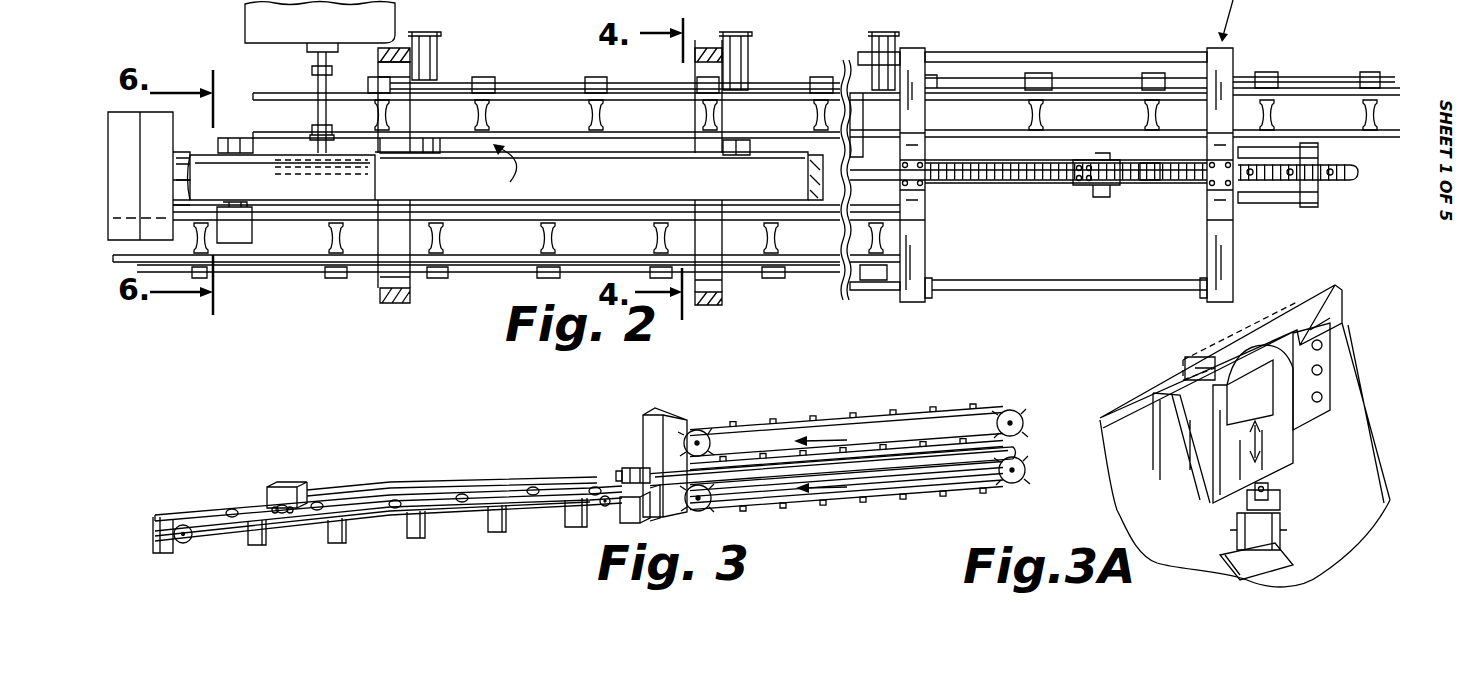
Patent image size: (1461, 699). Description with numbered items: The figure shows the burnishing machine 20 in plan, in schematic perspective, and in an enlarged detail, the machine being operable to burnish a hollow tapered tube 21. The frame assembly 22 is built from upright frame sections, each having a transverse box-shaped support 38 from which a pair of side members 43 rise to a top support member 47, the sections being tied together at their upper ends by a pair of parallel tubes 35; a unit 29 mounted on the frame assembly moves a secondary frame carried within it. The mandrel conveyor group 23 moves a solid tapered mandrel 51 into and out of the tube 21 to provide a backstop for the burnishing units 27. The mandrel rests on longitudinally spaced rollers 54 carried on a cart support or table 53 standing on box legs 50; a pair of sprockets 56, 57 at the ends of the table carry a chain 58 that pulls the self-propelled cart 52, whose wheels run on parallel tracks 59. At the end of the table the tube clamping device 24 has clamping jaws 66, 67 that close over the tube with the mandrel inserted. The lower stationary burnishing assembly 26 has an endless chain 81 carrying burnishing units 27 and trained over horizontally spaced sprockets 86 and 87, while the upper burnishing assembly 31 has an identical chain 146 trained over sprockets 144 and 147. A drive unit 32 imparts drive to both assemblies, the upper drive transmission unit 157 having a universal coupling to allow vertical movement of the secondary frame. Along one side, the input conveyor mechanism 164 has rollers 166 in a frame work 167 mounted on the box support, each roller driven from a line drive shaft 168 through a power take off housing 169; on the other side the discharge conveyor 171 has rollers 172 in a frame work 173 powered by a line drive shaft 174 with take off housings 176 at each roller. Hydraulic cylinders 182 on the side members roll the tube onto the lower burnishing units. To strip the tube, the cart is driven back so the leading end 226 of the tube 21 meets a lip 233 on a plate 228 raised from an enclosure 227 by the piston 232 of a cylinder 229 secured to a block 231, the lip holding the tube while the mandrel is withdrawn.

In FIG. 3, the burnishing machine 20 is at (372, 418).
In FIG. 2, the hollow tapered tube 21 is at (765, 158).
In FIG. 3, the hollow tapered tube 21 is at (1016, 446).
In FIG. 2, the frame assembly 22 is at (935, 35).
In FIG. 3, the mandrel conveyor group 23 is at (250, 472).
In FIG. 2, the tube clamping device 24 is at (235, 245).
In FIG. 3, the tube clamping device 24 is at (630, 512).
In FIG. 3, the lower stationary burnishing assembly 26 is at (904, 504).
In FIG. 2, the burnishing units 27 is at (1090, 188).
In FIG. 3, the burnishing units 27 is at (893, 415).
In FIG. 2, the unit 29 is at (925, 182).
In FIG. 2, the upper burnishing assembly 31 is at (1364, 162).
In FIG. 3, the upper burnishing assembly 31 is at (926, 405).
In FIG. 2, the drive unit 32 is at (252, 20).
In FIG. 3, the drive unit 32 is at (648, 432).
In FIG. 2, the parallel tubes 35 is at (1118, 52).
In FIG. 2, the transverse box-shaped support 38 is at (400, 245).
In FIG. 2, the side members 43 is at (397, 48).
In FIG. 2, the top support member 47 is at (918, 58).
In FIG. 3, the box legs 50 is at (262, 547).
In FIG. 2, the mandrel 51 is at (196, 157).
In FIG. 3, the mandrel 51 is at (525, 480).
In FIG. 2, the propelling cart 52 is at (120, 125).
In FIG. 3, the propelling cart 52 is at (283, 482).
In FIG. 3, the cart support or table 53 is at (242, 550).
In FIG. 3, the rollers 54 is at (458, 502).
In FIG. 3, the sprocket 56 is at (183, 543).
In FIG. 3, the sprocket 57 is at (603, 507).
In FIG. 3, the chain 58 is at (367, 527).
In FIG. 3, the parallel tracks 59 is at (203, 518).
In FIG. 3, the clamping jaw 66 is at (636, 468).
In FIG. 3, the clamping jaw 67 is at (656, 521).
In FIG. 3, the endless chain 81 is at (968, 486).
In FIG. 2, the sprocket 86 is at (301, 158).
In FIG. 3, the sprocket 86 is at (700, 512).
In FIG. 3, the sprocket 87 is at (1026, 470).
In FIG. 3, the sprocket 144 is at (700, 440).
In FIG. 2, the endless chain 146 is at (1150, 180).
In FIG. 2, the sprocket 147 is at (1345, 182).
In FIG. 3, the sprocket 147 is at (1020, 416).
In FIG. 2, the upper drive transmission unit 157 is at (302, 79).
In FIG. 2, the input conveyor mechanism 164 is at (571, 66).
In FIG. 2, the rollers 166 is at (487, 117).
In FIG. 2, the frame work 167 is at (458, 79).
In FIG. 2, the line drive shaft 168 is at (456, 92).
In FIG. 2, the power take off housing 169 is at (492, 79).
In FIG. 2, the discharge conveyor 171 is at (509, 286).
In FIG. 2, the rollers 172 is at (540, 238).
In FIG. 2, the frame work 173 is at (630, 222).
In FIG. 2, the line drive shaft 174 is at (597, 268).
In FIG. 2, the take off housing / source of power 176 is at (195, 278).
In FIG. 2, the hydraulic cylinders 182 is at (435, 33).
In FIG. 3, the leading end 226 is at (624, 476).
In FIG. 3A, the enclosure 227 is at (1318, 325).
In FIG. 3A, the plate 228 is at (1282, 415).
In FIG. 3A, the cylinder 229 is at (1262, 542).
In FIG. 3A, the block 231 is at (1270, 565).
In FIG. 3A, the piston 232 is at (1282, 507).
In FIG. 3A, the lip 233 is at (1267, 315).